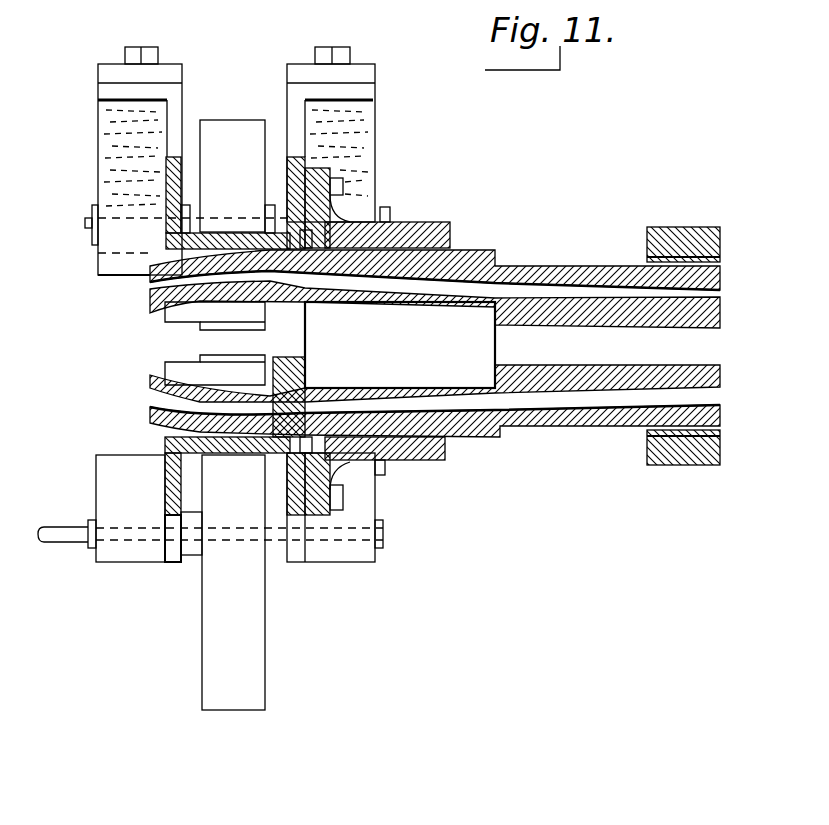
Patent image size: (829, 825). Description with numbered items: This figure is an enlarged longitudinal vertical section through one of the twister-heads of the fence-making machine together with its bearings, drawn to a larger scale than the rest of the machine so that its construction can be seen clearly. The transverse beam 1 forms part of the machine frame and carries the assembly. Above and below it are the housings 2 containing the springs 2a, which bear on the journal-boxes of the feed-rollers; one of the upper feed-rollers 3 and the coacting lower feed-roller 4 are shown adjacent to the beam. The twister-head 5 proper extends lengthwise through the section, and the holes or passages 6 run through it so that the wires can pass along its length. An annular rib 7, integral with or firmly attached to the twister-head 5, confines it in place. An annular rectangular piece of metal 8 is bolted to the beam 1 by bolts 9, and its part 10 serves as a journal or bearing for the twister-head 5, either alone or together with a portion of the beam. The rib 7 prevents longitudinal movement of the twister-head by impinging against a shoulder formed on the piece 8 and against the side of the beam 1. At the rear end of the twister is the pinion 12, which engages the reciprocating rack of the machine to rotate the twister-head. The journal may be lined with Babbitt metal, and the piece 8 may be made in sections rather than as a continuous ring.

The transverse beam 1 is at (176, 200).
The housings 2 is at (236, 161).
The springs 2a is at (388, 126).
The upper feed-roller 3 is at (200, 337).
The lower feed-roller 4 is at (226, 364).
The twister-head 5 is at (152, 318).
The holes or passages 6 is at (148, 283).
The annular rib 7 is at (352, 220).
The annular rectangular piece 8 is at (448, 242).
The bolts 9 is at (345, 186).
The journal or bearing 10 is at (366, 341).
The pinion 12 is at (670, 230).